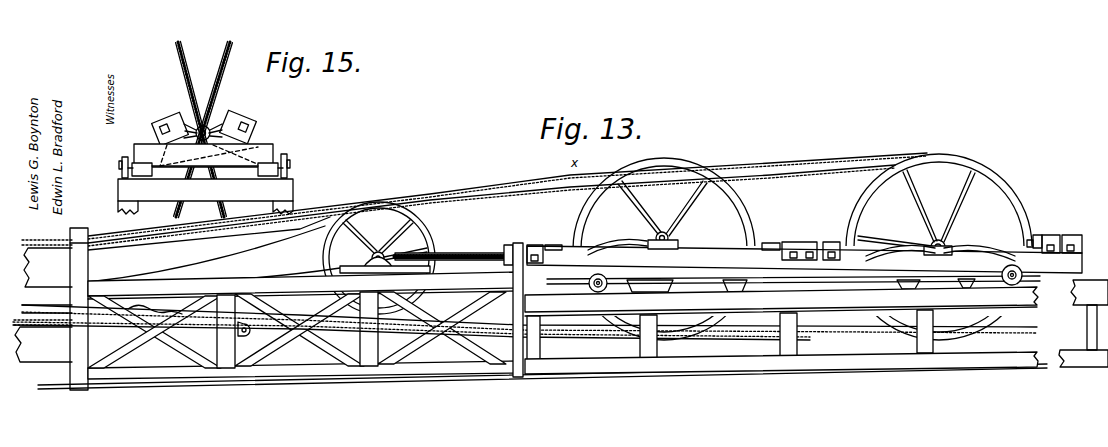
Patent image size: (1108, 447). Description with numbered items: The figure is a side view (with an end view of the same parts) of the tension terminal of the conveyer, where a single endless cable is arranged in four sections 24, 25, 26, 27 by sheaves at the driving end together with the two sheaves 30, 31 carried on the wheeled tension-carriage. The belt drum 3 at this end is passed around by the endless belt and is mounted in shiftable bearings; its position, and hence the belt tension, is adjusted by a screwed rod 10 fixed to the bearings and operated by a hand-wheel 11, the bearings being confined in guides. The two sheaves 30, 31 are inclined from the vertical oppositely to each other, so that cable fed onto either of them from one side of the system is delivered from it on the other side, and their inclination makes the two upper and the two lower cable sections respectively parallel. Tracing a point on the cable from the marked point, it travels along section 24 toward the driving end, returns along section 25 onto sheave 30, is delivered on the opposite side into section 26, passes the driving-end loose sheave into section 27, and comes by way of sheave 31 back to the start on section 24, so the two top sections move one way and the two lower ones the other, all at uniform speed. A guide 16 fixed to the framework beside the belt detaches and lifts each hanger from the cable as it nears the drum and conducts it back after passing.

In FIG. 13, the drum 3 is at (384, 258).
In FIG. 13, the screwed rod 10 is at (450, 248).
In FIG. 13, the hand-wheel 11 is at (518, 243).
In FIG. 13, the guide 16 is at (155, 308).
In FIG. 15, the cable section 24 is at (232, 45).
In FIG. 13, the cable section 24 is at (507, 196).
In FIG. 13, the cable section 25 is at (529, 317).
In FIG. 15, the cable section 26 is at (176, 44).
In FIG. 13, the cable section 26 is at (553, 190).
In FIG. 15, the cable section 27 is at (178, 210).
In FIG. 13, the cable section 27 is at (567, 334).
In FIG. 15, the sheave 30 is at (187, 80).
In FIG. 13, the sheave 30 is at (1020, 200).
In FIG. 15, the sheave 31 is at (222, 80).
In FIG. 13, the sheave 31 is at (742, 208).